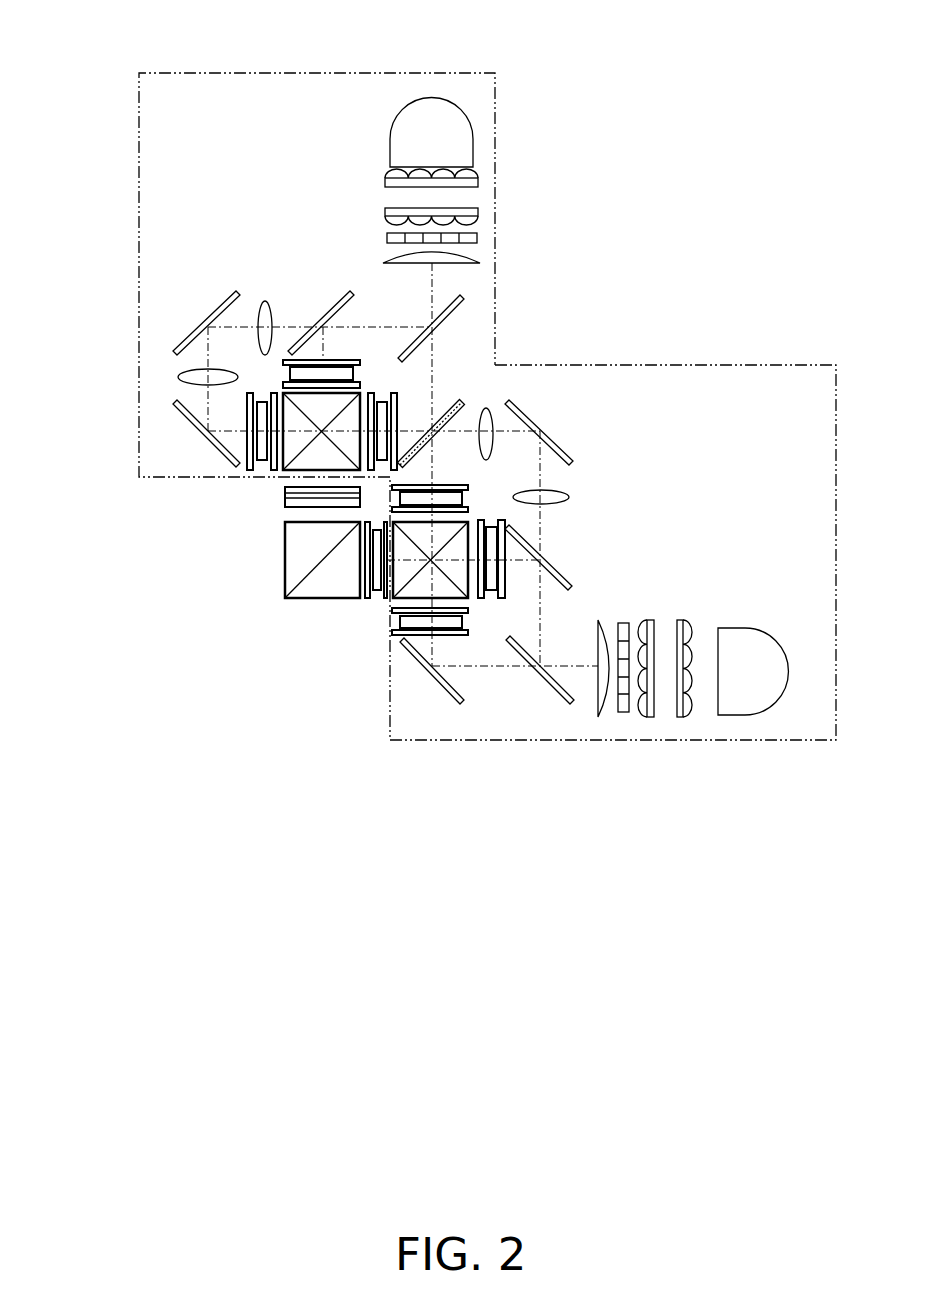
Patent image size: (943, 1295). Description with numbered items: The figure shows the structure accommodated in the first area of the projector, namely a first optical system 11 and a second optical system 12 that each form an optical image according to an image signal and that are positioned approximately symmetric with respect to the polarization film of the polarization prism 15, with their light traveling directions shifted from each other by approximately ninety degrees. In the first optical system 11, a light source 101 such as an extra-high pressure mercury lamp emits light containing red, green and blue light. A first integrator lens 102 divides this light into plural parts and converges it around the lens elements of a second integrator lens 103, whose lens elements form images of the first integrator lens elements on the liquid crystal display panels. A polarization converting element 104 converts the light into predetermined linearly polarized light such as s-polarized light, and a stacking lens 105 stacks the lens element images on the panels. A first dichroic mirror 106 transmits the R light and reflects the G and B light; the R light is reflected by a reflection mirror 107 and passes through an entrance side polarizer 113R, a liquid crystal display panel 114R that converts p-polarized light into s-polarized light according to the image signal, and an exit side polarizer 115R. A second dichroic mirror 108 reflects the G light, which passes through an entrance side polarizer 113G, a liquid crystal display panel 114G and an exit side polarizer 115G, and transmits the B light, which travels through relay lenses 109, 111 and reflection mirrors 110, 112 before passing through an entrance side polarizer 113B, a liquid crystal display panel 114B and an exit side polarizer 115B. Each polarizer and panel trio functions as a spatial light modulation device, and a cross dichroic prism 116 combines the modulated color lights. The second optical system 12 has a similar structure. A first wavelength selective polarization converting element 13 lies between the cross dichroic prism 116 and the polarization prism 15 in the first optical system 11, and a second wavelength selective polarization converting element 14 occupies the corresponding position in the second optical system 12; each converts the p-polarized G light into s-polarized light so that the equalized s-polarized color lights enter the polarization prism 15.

The first optical system 11 is at (778, 364).
The second optical system 12 is at (161, 72).
The first wavelength selective polarization converting element 13 is at (392, 605).
The second wavelength selective polarization converting element 14 is at (283, 470).
The polarization prism 15 is at (285, 587).
The light source 101 is at (465, 148).
The first integrator lens 102 is at (478, 182).
The second integrator lens 103 is at (478, 212).
The polarization converting element 104 is at (477, 238).
The stacking lens 105 is at (480, 258).
The first dichroic mirror 106 is at (462, 300).
The reflection mirror 107 is at (455, 695).
The second dichroic mirror 108 is at (322, 320).
The relay lens 109 is at (600, 500).
The reflection mirror 110 is at (175, 352).
The relay lens 111 is at (178, 377).
The reflection mirror 112 is at (173, 402).
The entrance side polarizer 113R is at (372, 392).
The liquid crystal display panel 114R is at (382, 400).
The exit side polarizer 115R is at (394, 392).
The entrance side polarizer 113G is at (348, 360).
The liquid crystal display panel 114G is at (285, 365).
The exit side polarizer 115G is at (358, 385).
The entrance side polarizer 113B is at (250, 472).
The liquid crystal display panel 114B is at (262, 472).
The exit side polarizer 115B is at (275, 472).
The cross dichroic prism 116 is at (285, 497).